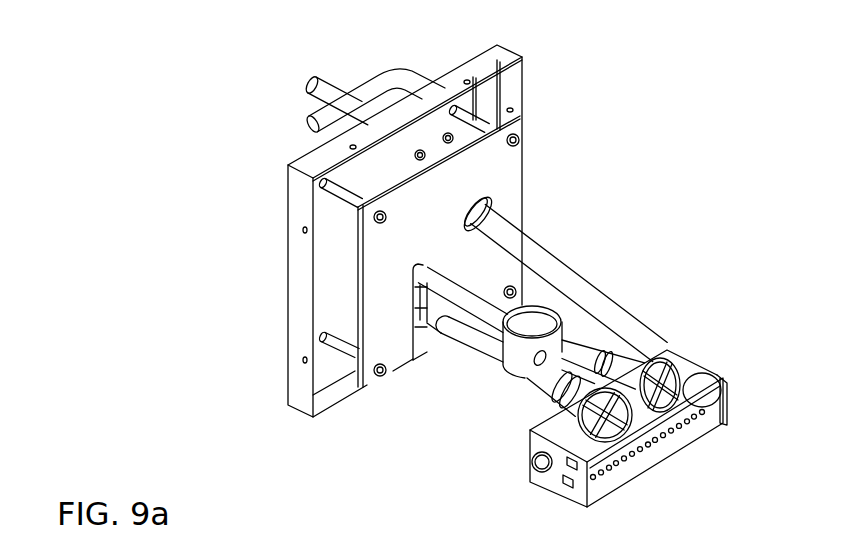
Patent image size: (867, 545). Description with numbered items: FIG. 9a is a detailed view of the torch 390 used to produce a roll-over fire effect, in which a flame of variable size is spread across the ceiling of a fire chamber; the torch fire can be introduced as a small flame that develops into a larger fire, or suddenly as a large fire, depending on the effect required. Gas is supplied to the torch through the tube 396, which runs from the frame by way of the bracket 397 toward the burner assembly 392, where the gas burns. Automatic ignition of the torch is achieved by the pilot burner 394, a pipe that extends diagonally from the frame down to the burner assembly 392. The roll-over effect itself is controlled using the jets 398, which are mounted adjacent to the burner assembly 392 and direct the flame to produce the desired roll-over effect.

The heat exchanger assembly 390 is at (227, 200).
The burner assembly 392 is at (665, 450).
The pilot burner 394 is at (578, 278).
The tube 396 is at (490, 362).
The upper pipe bracket 397 is at (455, 286).
The jets 398 is at (627, 375).